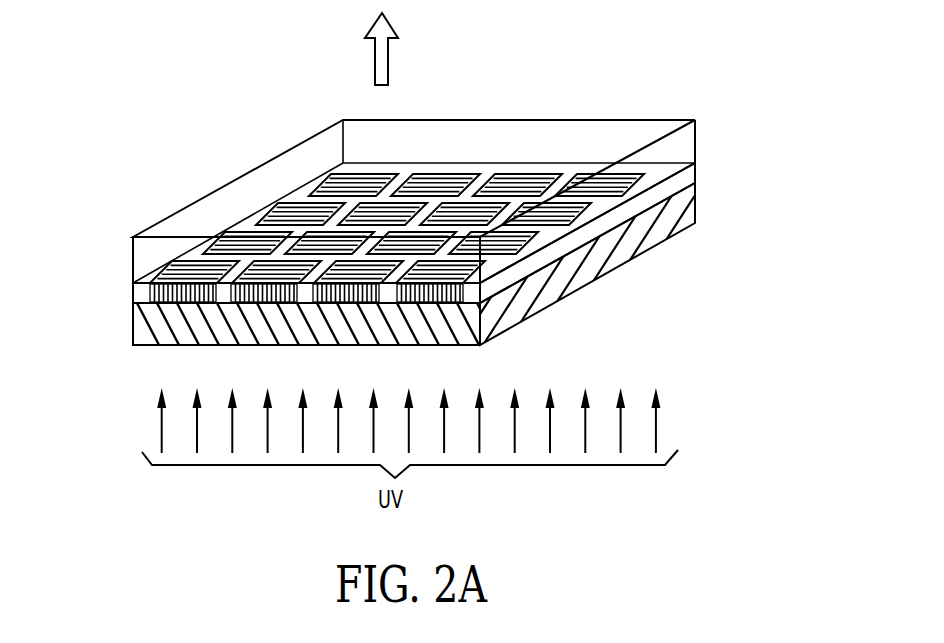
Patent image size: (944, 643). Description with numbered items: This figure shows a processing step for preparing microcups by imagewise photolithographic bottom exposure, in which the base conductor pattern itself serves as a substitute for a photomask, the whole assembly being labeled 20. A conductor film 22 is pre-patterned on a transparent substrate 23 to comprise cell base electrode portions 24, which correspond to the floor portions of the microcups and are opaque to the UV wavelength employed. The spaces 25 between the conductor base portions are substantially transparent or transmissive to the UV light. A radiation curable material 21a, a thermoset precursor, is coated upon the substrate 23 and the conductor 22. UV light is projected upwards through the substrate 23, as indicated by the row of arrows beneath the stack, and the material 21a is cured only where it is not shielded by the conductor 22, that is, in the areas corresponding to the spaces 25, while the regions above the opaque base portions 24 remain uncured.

The light emitting device 20 is at (724, 111).
The radiation curable material 21a is at (143, 252).
The conductor film 22 is at (140, 294).
The substrate 23 is at (143, 334).
The cell base electrode portions 24 is at (493, 293).
The spaces 25 is at (508, 257).